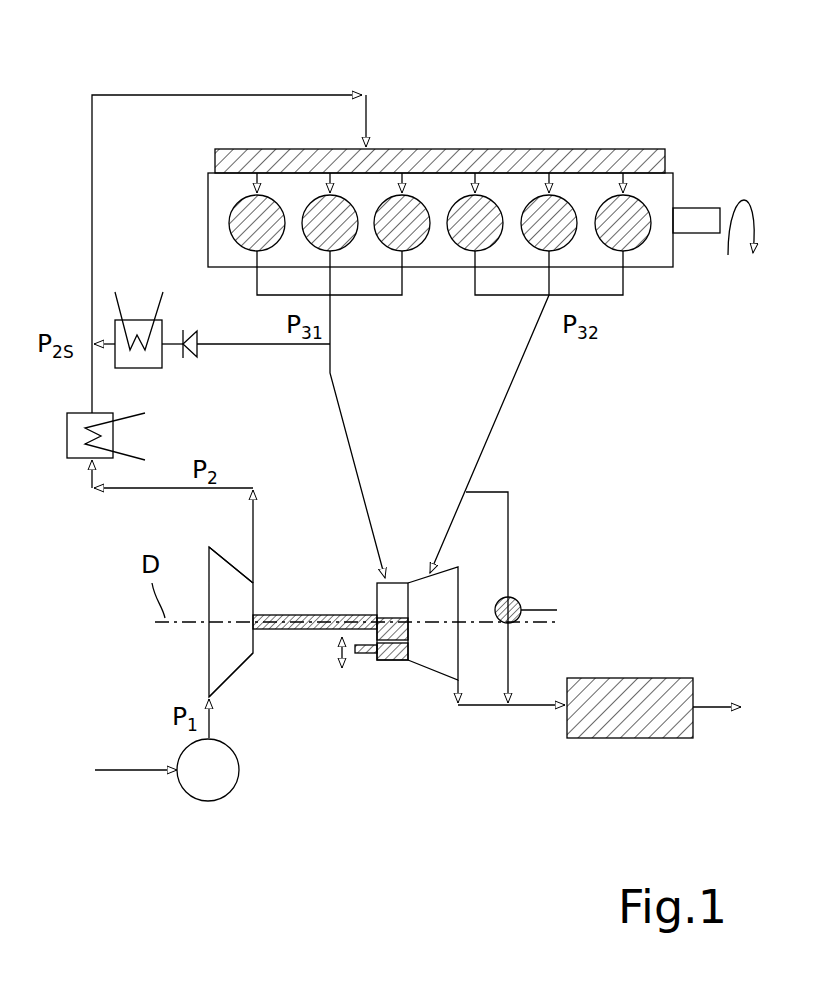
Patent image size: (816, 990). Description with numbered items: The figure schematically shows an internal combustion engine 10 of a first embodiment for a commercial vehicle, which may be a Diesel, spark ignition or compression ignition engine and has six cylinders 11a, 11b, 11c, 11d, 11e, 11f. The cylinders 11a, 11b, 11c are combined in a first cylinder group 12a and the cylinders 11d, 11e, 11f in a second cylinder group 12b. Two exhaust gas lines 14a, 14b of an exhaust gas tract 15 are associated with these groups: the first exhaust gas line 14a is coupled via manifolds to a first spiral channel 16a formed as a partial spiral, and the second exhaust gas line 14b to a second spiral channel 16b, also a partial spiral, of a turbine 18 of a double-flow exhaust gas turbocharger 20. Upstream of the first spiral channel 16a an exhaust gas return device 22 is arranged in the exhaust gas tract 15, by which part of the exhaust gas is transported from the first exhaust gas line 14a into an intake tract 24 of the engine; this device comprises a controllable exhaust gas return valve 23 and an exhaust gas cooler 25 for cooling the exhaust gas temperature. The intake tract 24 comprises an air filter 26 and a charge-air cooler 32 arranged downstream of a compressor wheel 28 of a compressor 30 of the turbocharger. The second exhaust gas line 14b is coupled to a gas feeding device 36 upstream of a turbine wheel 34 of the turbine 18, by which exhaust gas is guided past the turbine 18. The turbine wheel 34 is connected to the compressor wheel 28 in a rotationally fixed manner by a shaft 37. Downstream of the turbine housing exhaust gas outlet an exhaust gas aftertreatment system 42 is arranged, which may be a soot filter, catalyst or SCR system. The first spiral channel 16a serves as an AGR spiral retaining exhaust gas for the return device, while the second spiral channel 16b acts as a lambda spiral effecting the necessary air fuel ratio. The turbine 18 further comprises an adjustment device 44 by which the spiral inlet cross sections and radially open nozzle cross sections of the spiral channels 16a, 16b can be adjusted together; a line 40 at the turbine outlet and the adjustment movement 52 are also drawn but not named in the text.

The internal combustion engine 10 is at (602, 68).
The cylinder 11a is at (246, 212).
The cylinder 11b is at (321, 212).
The cylinder 11c is at (418, 208).
The cylinder 11d is at (484, 208).
The cylinder 11e is at (565, 212).
The cylinder 11f is at (636, 210).
The first cylinder group 12a is at (370, 296).
The second cylinder group 12b is at (479, 296).
The first exhaust gas line 14a is at (352, 455).
The second exhaust gas line 14b is at (496, 420).
The exhaust gas tract 15 is at (420, 806).
The first spiral channel 16a is at (392, 657).
The second spiral channel 16b is at (392, 600).
The turbine 18 is at (426, 540).
The exhaust gas turbocharger 20 is at (172, 678).
The exhaust gas return device 22 is at (207, 352).
The exhaust gas return valve 23 is at (192, 332).
The intake tract 24 is at (153, 828).
The exhaust gas cooler 25 is at (160, 367).
The air filter 26 is at (220, 786).
The compressor wheel 28 is at (225, 573).
The compressor 30 is at (258, 672).
The charge-air cooler 32 is at (72, 457).
The turbine wheel 34 is at (445, 592).
The gas feeding device 36 is at (530, 582).
The shaft 37 is at (337, 613).
The turbine outlet line 40 is at (458, 676).
The exhaust gas aftertreatment system 42 is at (648, 690).
The adjustment device 44 is at (363, 664).
The adjustment movement 52 is at (342, 670).